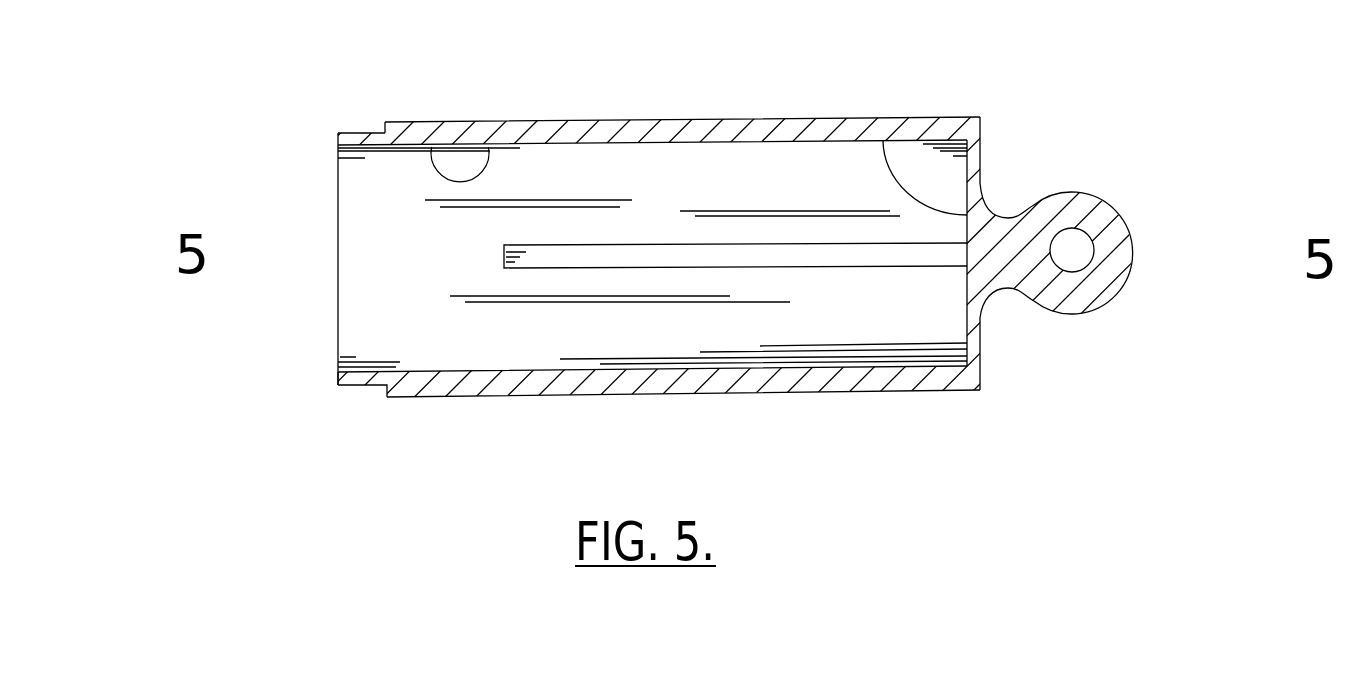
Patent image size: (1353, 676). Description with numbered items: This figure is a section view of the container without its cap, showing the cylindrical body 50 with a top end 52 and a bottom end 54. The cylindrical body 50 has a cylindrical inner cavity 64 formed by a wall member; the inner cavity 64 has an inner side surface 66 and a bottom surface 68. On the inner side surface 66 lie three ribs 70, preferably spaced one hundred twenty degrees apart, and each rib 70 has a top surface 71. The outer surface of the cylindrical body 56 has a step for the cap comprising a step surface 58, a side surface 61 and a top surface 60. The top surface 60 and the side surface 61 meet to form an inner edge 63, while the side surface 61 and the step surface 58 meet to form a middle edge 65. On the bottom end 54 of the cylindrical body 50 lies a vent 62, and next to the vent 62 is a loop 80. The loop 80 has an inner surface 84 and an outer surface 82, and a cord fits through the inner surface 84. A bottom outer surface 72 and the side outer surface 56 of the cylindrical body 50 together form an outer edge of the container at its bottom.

The cylindrical body 50 is at (540, 398).
The top end 52 is at (330, 308).
The bottom end 54 is at (1100, 157).
The outer surface of the cylindrical body 56 is at (642, 395).
The step surface 58 is at (383, 386).
The top surface 60 is at (340, 378).
The side surface 61 is at (375, 384).
The vent 62 is at (978, 176).
The inner edge 63 is at (338, 131).
The inner cavity 64 is at (380, 194).
The middle edge 65 is at (385, 131).
The inner side surface 66 is at (433, 145).
The bottom surface 68 is at (883, 140).
The ribs 70 is at (623, 252).
The top surface of rib 71 is at (504, 257).
The bottom outer surface 72 is at (985, 363).
The loop 80 is at (1135, 243).
The outer surface of loop 82 is at (1110, 205).
The inner surface of loop 84 is at (1075, 262).